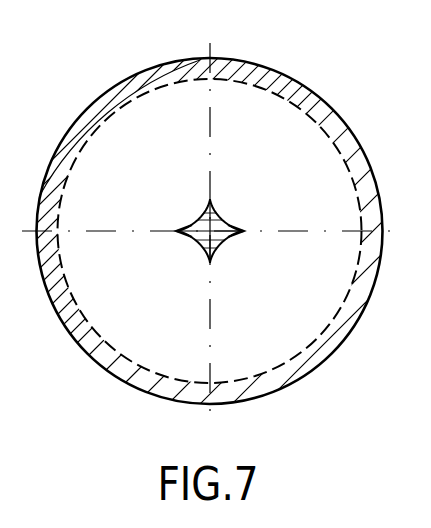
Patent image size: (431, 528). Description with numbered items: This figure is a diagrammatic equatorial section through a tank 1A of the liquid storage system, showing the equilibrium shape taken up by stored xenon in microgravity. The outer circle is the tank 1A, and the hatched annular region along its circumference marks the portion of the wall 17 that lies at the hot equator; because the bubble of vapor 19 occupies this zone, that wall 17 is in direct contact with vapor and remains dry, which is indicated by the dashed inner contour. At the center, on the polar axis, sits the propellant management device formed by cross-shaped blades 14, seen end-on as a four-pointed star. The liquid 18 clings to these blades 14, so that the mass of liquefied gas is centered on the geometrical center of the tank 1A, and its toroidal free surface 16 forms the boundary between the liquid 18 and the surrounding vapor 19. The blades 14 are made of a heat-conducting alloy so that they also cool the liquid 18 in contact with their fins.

The tank 1A is at (264, 66).
The bubble of vapor 19 is at (304, 161).
The wall 17 is at (326, 344).
The free surface of the liquid 16 is at (221, 214).
The cross-shaped blades 14 is at (240, 234).
The liquid 18 is at (200, 238).